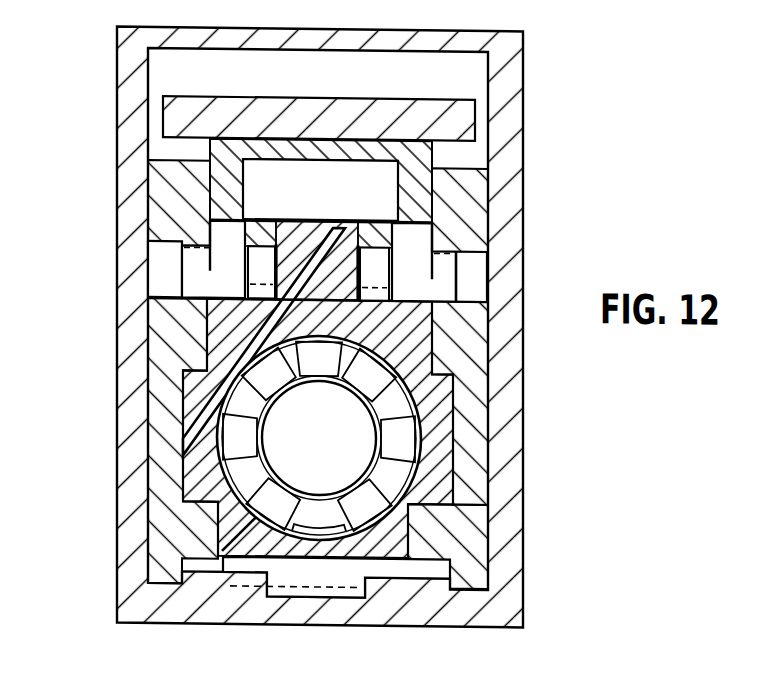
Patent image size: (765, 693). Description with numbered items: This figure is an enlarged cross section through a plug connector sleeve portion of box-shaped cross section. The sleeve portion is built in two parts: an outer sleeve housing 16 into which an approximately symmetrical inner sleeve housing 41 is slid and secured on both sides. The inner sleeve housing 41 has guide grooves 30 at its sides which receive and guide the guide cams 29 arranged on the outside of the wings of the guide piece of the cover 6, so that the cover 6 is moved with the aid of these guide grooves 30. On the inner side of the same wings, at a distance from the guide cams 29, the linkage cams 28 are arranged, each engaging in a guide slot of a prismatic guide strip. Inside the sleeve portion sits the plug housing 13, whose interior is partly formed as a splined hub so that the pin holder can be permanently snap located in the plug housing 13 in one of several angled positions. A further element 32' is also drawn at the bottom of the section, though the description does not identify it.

The cover 6 is at (272, 150).
The linkage cams 28 is at (375, 258).
The guide grooves 30 is at (163, 268).
The guide cams 29 is at (437, 290).
The plug housing 13 is at (433, 399).
The inner sleeve housing 41 is at (463, 542).
The outer sleeve housing 16 is at (200, 602).
The bottom plate 32' is at (336, 619).